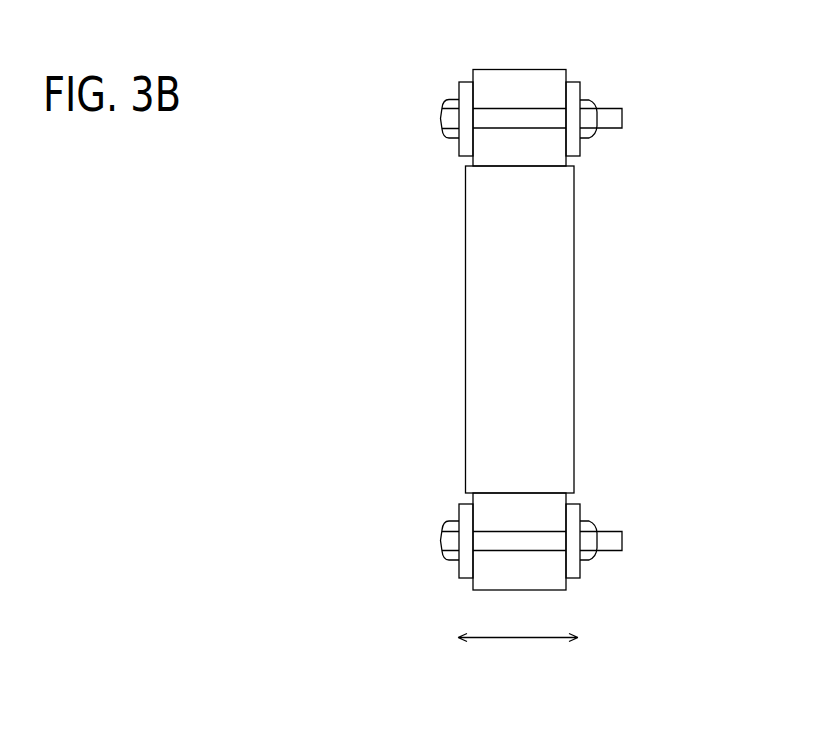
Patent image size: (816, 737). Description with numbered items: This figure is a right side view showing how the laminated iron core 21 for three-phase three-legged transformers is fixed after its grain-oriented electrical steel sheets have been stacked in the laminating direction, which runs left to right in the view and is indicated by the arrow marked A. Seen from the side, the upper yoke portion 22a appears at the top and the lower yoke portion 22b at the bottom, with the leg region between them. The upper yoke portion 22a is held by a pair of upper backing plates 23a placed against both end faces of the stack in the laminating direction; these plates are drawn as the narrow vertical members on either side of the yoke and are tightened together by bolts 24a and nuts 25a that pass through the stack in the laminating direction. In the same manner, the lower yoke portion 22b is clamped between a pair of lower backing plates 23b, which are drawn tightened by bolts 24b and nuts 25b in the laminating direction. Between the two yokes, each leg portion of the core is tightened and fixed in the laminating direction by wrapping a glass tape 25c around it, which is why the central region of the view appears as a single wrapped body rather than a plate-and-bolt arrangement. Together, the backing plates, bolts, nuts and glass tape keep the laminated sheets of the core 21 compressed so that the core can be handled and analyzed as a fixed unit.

The laminated iron core 21 is at (667, 238).
The upper yoke portion 22a is at (518, 82).
The lower yoke portion 22b is at (525, 570).
The upper backing plates 23a is at (468, 89).
The lower backing plates 23b is at (468, 511).
The bolts 24a is at (450, 131).
The bolts 24b is at (450, 554).
The nuts 25a is at (587, 131).
The nuts 25b is at (587, 554).
The glass tape 25c is at (548, 322).